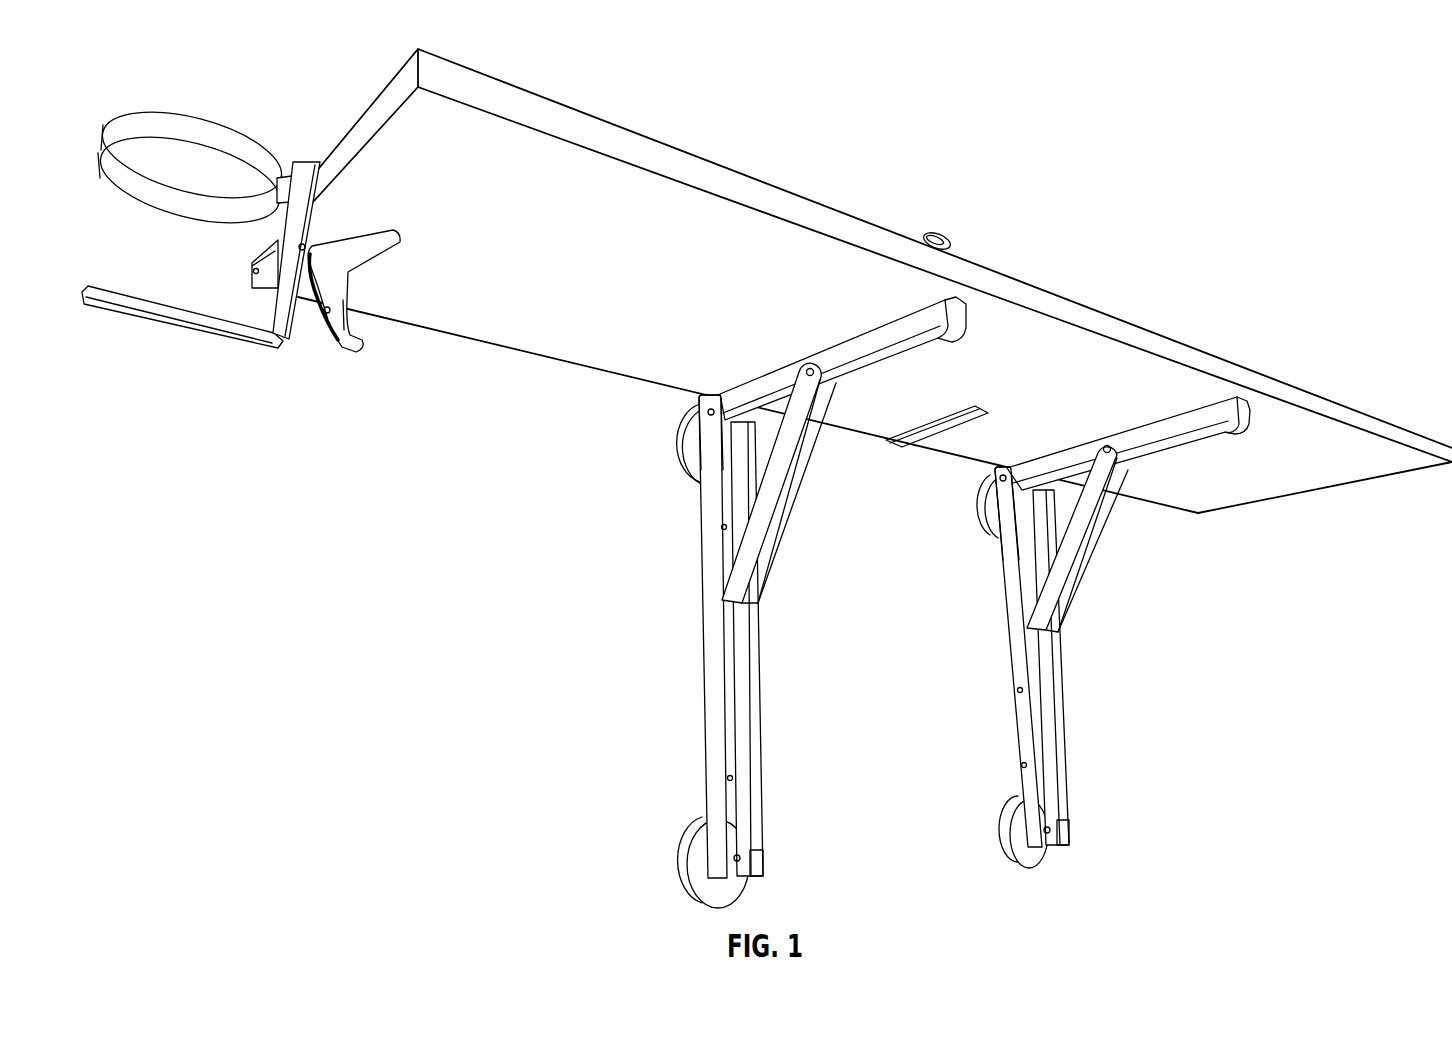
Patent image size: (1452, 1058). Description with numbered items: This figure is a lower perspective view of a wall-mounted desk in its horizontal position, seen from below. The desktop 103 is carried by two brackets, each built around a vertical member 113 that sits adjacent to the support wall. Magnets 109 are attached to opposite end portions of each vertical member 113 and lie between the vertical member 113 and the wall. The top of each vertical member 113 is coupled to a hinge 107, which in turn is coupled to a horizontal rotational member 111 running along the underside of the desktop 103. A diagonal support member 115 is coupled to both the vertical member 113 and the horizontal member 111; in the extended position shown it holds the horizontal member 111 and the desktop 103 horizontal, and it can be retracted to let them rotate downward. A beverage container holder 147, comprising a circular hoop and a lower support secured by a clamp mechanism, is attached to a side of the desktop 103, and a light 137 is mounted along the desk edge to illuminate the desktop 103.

The desktop 103 is at (712, 170).
The hinge 107 is at (699, 404).
The magnet 109 is at (693, 858).
The horizontal rotational member 111 is at (843, 350).
The vertical member 113 is at (762, 756).
The support member 115 is at (778, 527).
The light 137 is at (946, 231).
The beverage container holder 147 is at (213, 130).